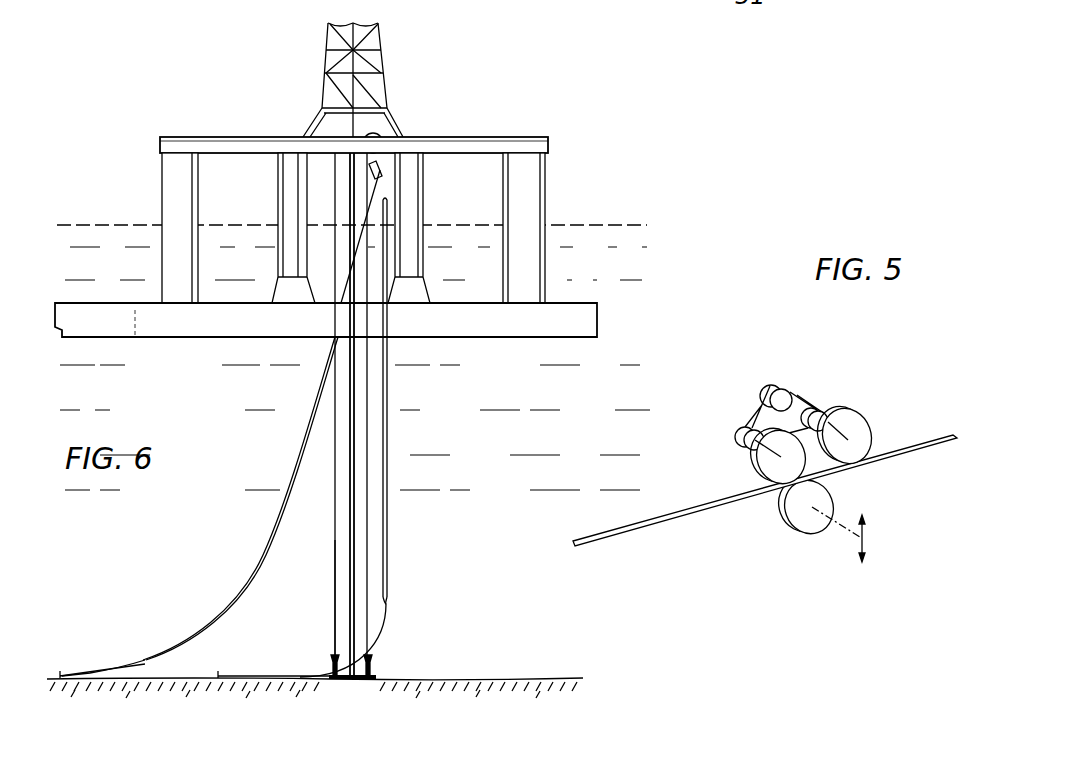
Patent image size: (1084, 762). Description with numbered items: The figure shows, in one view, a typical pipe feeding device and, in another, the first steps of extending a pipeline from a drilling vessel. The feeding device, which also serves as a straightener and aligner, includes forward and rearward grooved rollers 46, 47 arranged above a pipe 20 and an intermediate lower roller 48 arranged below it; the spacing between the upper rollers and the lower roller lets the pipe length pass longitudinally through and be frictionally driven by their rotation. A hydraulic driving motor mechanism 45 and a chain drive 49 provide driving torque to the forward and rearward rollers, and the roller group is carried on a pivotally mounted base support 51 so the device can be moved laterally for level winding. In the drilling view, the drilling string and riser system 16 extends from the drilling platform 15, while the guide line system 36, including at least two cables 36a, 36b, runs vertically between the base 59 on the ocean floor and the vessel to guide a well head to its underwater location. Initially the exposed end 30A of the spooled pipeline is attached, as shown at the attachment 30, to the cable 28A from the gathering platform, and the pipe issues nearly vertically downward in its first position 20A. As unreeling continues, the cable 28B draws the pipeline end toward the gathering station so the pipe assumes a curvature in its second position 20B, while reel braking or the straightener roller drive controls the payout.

In FIG. 6, the drilling platform 15 is at (482, 137).
In FIG. 6, the drilling string and riser system 16 is at (356, 400).
In FIG. 5, the production pipeline 20 is at (675, 522).
In FIG. 6, the first position of the pipe 20A is at (389, 447).
In FIG. 6, the second position of the pipe 20B is at (298, 477).
In FIG. 6, the cable from the gathering platform 28A is at (266, 673).
In FIG. 6, the cable from the gathering platform 28B is at (82, 672).
In FIG. 6, the attachment of cable to pipeline end 30 is at (143, 660).
In FIG. 6, the exposed end of the spooled production pipeline 30A is at (386, 599).
In FIG. 6, the guide line system 36 is at (330, 547).
In FIG. 6, the cable 36a is at (336, 596).
In FIG. 6, the cable 36b is at (369, 538).
In FIG. 5, the hydraulic driving motor mechanism 45 is at (770, 388).
In FIG. 5, the forward grooved roller 46 is at (760, 470).
In FIG. 5, the rearward grooved roller 47 is at (863, 430).
In FIG. 5, the intermediate lower roller 48 is at (808, 523).
In FIG. 5, the chain drive 49 is at (812, 402).
In FIG. 6, the base support 51 is at (380, 170).
In FIG. 6, the base 59 is at (373, 667).